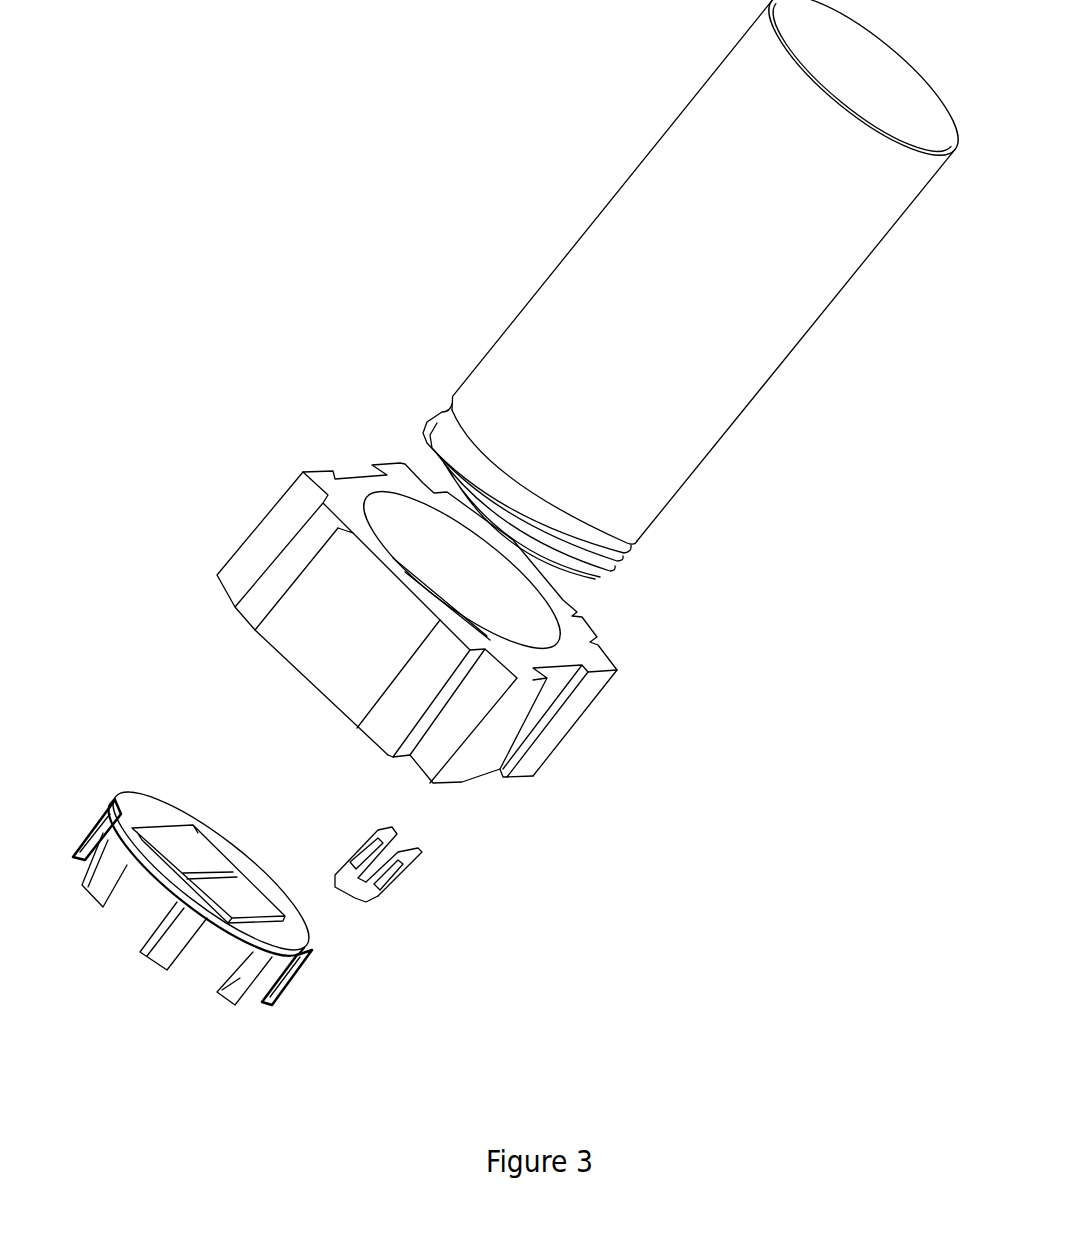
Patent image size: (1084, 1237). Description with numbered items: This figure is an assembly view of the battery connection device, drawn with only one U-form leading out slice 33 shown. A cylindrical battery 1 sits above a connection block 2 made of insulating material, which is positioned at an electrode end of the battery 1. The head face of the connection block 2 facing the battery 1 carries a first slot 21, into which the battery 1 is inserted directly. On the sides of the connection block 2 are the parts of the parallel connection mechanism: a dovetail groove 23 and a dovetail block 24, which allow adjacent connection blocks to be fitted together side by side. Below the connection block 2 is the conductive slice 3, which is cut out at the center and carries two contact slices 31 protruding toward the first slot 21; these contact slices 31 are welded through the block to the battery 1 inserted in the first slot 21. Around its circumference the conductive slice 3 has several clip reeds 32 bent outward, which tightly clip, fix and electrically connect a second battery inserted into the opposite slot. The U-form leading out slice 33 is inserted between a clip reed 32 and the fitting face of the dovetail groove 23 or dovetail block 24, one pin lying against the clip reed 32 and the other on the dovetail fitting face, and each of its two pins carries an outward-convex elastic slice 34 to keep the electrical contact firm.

The battery 1 is at (692, 416).
The connection block 2 is at (350, 488).
The first slot 21 is at (512, 607).
The dovetail groove 23 is at (557, 692).
The dovetail block 24 is at (322, 641).
The conductive slice 3 is at (133, 813).
The contact slice 31 is at (190, 852).
The clip reed 32 is at (165, 948).
The U-form leading out slice 33 is at (352, 900).
The elastic slice 34 is at (400, 880).